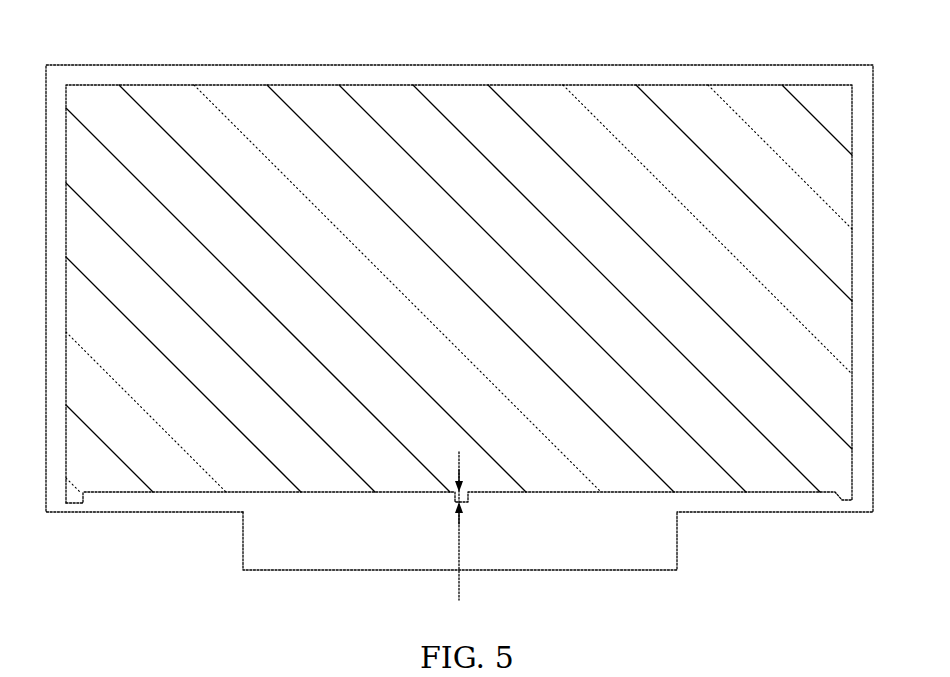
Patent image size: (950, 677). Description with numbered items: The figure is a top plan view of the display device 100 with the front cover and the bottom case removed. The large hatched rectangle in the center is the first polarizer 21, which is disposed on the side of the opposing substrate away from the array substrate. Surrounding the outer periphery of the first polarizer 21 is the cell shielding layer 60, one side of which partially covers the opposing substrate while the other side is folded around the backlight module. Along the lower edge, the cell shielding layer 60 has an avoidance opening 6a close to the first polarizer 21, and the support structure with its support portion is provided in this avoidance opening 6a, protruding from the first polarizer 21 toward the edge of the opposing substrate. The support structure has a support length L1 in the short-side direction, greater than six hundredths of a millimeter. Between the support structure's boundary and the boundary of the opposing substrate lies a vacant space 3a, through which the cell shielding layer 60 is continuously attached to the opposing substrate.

The display device 100 is at (98, 44).
The vacant space 3a is at (74, 513).
The avoidance opening 6a is at (82, 502).
The first polarizer 21 is at (165, 482).
The cell shielding layer 60 is at (717, 502).
The support length L1 is at (472, 527).